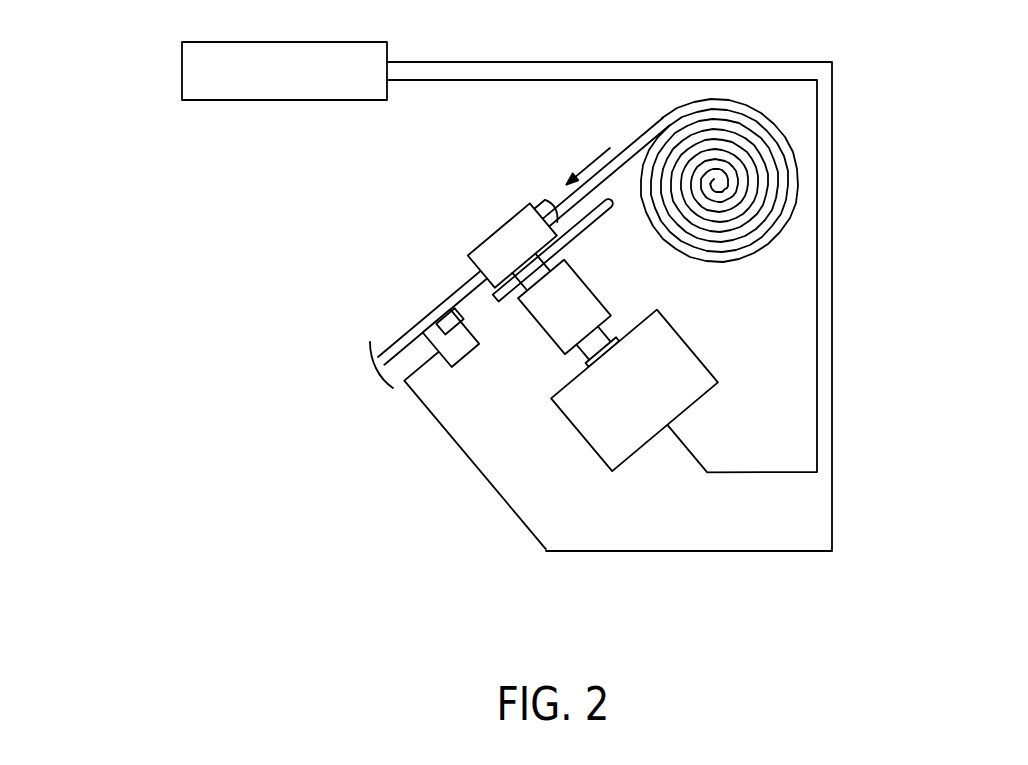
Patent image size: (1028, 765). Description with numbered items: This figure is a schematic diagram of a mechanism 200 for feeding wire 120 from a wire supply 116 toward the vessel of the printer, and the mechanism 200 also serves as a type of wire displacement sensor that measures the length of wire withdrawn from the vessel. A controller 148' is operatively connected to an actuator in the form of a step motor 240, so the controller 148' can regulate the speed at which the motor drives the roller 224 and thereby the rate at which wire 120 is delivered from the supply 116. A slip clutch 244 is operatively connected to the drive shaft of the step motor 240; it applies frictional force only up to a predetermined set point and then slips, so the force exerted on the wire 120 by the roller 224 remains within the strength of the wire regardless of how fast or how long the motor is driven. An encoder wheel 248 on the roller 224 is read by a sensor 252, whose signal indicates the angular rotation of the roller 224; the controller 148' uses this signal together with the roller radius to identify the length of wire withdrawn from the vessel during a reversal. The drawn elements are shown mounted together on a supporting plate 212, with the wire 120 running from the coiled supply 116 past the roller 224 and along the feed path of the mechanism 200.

The mechanism 200 is at (946, 106).
The controller 148' is at (320, 64).
The wire supply 116 is at (768, 123).
The wire 120 is at (624, 157).
The roller 224 is at (500, 232).
The slip clutch 244 is at (608, 310).
The step motor 240 is at (698, 352).
The encoder wheel 248 is at (495, 301).
The sensor 252 is at (460, 363).
The frame plate 212 is at (555, 512).